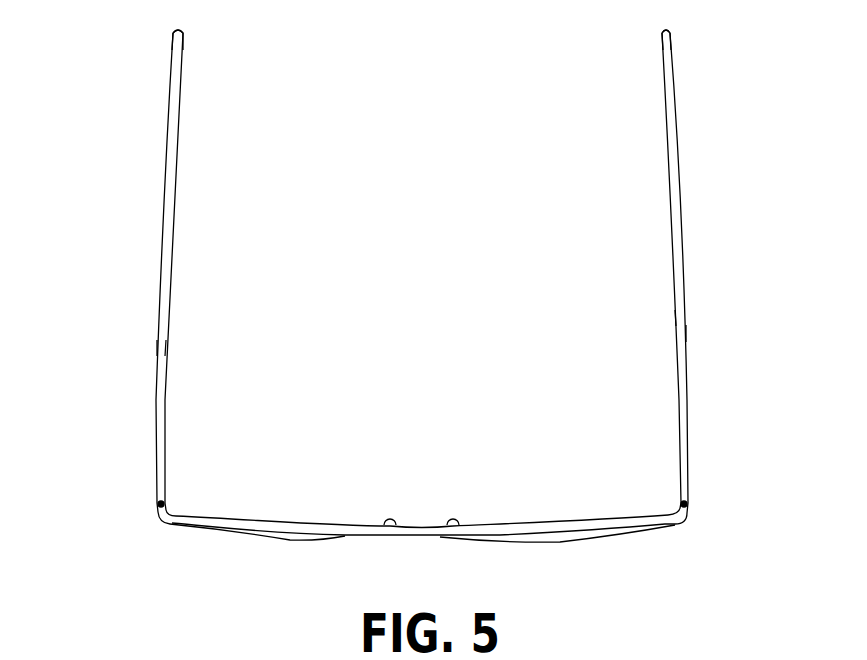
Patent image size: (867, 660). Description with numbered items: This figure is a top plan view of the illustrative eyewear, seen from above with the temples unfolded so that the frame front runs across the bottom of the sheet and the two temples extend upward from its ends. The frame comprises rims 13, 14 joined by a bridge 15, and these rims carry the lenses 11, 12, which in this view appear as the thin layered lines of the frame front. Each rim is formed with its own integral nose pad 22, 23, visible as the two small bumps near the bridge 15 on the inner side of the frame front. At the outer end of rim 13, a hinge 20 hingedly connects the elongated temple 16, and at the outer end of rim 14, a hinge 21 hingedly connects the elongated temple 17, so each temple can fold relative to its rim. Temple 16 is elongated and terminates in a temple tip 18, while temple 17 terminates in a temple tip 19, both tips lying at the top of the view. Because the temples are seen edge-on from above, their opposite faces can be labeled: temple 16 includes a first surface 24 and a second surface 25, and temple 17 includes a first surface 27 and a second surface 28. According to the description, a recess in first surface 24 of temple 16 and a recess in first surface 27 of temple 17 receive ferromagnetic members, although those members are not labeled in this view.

The lens 11 is at (593, 541).
The lens 12 is at (272, 537).
The rim 13 is at (563, 528).
The rim 14 is at (284, 527).
The bridge 15 is at (440, 537).
The temple 16 is at (681, 210).
The temple 17 is at (165, 152).
The temple tip 18 is at (670, 40).
The temple tip 19 is at (172, 45).
The hinge 20 is at (683, 503).
The hinge 21 is at (160, 505).
The nose pad 22 is at (452, 517).
The nose pad 23 is at (388, 517).
The first surface 24 is at (687, 330).
The second surface 25 is at (675, 317).
The first surface 27 is at (157, 347).
The second surface 28 is at (165, 348).